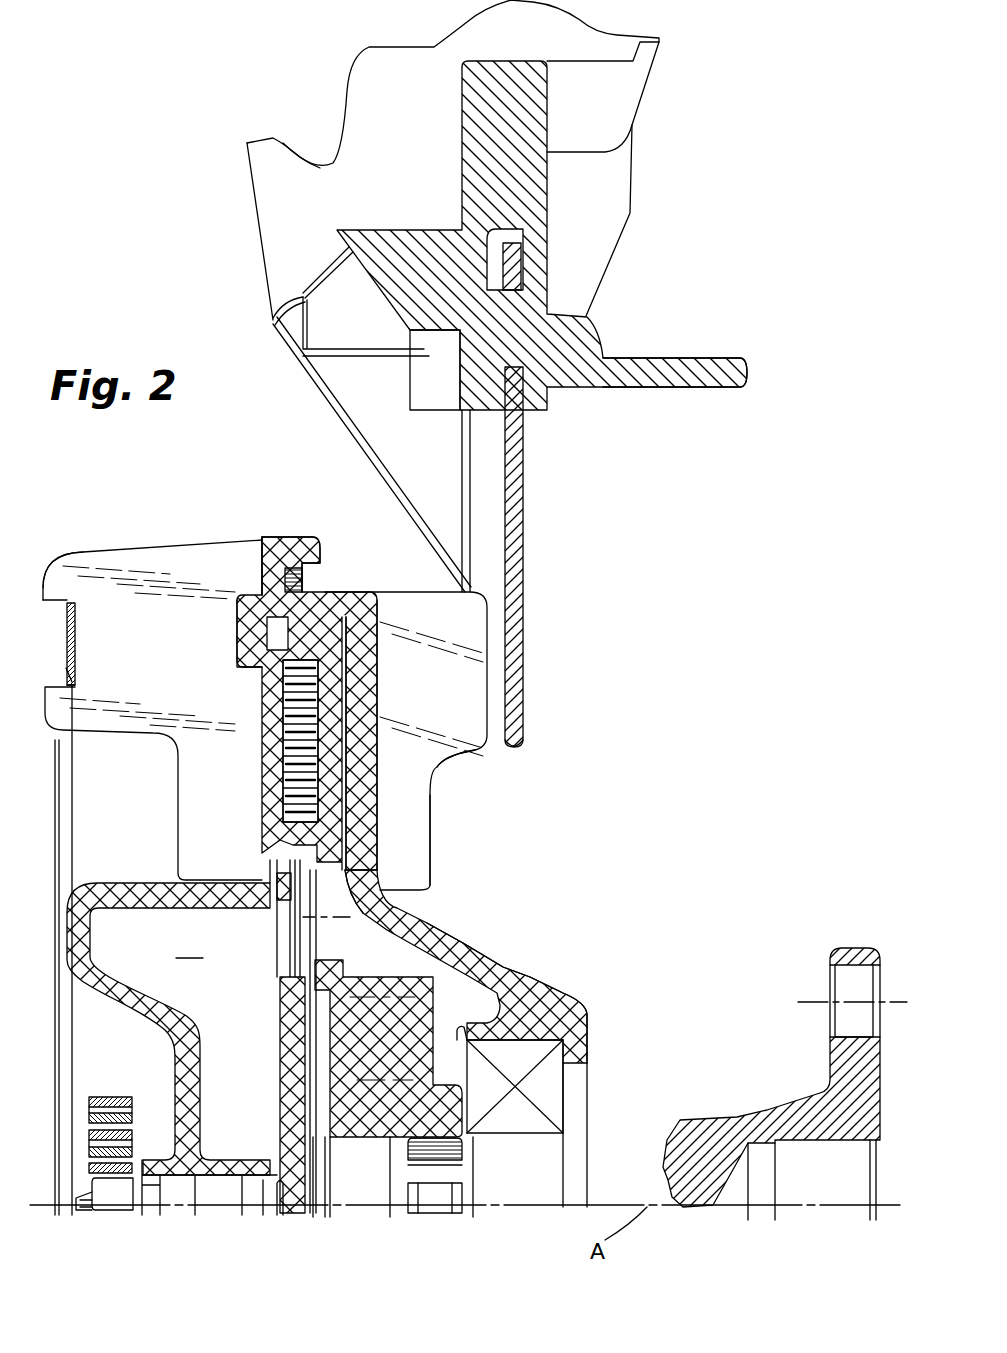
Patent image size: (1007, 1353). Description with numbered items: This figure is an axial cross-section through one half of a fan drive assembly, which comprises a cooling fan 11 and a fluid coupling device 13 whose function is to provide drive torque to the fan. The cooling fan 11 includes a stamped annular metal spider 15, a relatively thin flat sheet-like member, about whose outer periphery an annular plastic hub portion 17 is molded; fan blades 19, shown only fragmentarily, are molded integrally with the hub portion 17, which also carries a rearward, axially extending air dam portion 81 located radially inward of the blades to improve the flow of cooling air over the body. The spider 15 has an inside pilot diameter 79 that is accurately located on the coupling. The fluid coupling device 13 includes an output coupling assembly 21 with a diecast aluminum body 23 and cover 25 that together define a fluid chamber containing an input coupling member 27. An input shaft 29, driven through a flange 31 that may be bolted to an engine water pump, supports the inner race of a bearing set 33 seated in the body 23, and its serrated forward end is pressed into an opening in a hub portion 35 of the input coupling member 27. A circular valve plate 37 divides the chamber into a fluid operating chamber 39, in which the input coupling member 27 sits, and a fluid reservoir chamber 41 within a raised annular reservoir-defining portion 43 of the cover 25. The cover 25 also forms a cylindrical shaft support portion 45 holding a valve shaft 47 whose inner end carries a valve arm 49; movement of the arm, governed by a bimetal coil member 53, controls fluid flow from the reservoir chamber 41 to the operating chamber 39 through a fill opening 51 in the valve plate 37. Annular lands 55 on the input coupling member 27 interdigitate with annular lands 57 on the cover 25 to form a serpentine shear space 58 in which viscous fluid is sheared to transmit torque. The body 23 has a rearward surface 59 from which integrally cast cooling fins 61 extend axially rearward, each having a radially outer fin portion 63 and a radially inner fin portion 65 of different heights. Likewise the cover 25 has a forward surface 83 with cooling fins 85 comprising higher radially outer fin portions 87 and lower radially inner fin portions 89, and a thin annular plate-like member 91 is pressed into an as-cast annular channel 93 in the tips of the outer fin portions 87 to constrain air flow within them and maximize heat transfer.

The cooling fan 11 is at (675, 213).
The fluid coupling device 13 is at (598, 858).
The spider 15 is at (520, 525).
The hub portion 17 is at (470, 350).
The fan blades 19 is at (400, 63).
The output coupling assembly 21 is at (340, 535).
The body member 23 is at (513, 975).
The cover member 25 is at (262, 717).
The input coupling member 27 is at (340, 973).
The input shaft 29 is at (718, 1120).
The flange 31 is at (850, 948).
The bearing set 33 is at (565, 1085).
The hub portion 35 is at (332, 1140).
The valve plate 37 is at (283, 1027).
The fluid operating chamber 39 is at (353, 930).
The fluid reservoir chamber 41 is at (190, 945).
The reservoir-defining portion 43 is at (135, 883).
The shaft support portion 45 is at (248, 1190).
The valve shaft 47 is at (170, 1195).
The valve arm 49 is at (283, 1093).
The fill opening 51 is at (277, 930).
The coil member 53 is at (112, 1097).
The annular lands 55 is at (283, 797).
The annular lands 57 is at (377, 663).
The shear space 58 is at (237, 640).
The rearward surface 59 is at (378, 770).
The cooling fins 61 is at (487, 762).
The radially outer fin portion 63 is at (430, 612).
The radially inner fin portion 65 is at (430, 797).
The inside pilot diameter 79 is at (520, 745).
The air dam portion 81 is at (668, 385).
The forward surface 83 is at (262, 583).
The cooling fins 85 is at (40, 600).
The radially outer fin portion 87 is at (178, 567).
The radially inner fin portion 89 is at (200, 777).
The plate-like member 91 is at (65, 663).
The annular channel 93 is at (63, 607).